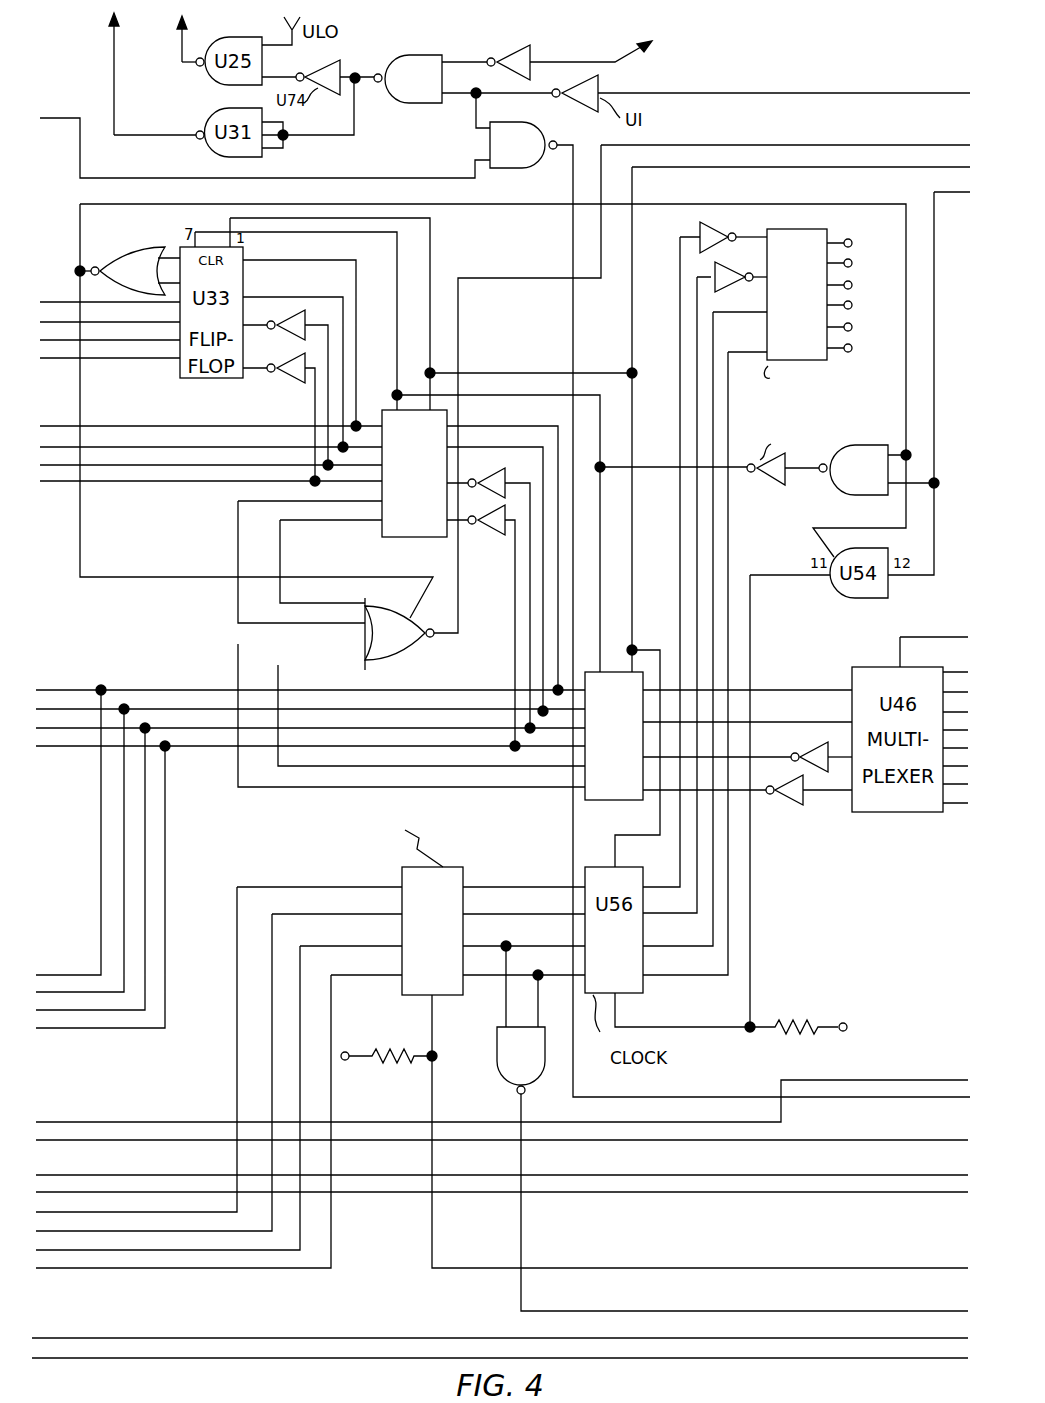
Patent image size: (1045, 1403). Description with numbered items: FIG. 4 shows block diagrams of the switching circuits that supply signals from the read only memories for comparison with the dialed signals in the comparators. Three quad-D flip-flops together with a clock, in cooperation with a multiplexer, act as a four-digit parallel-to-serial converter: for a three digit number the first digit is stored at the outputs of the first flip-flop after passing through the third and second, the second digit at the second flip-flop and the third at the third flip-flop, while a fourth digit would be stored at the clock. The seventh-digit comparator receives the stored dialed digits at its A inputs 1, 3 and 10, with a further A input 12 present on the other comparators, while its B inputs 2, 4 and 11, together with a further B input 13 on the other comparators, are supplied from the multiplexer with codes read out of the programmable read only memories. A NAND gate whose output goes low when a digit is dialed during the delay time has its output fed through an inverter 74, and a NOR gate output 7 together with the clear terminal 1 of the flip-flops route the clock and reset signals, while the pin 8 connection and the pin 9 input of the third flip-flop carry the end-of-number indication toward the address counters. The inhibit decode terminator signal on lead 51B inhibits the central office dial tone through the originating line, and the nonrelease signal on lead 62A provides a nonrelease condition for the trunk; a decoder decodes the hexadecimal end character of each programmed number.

The SI3 signal output 62A is at (123, 67).
The IDT signal output 51B is at (192, 31).
The input 12 is at (461, 73).
The inverter 74 is at (532, 56).
The input 4 is at (505, 595).
The input 13 is at (127, 263).
The flip-flop U34 7 is at (469, 557).
The input 3 is at (397, 629).
The flip-flop U35 9 is at (718, 741).
The input 1 is at (784, 309).
The input 10 is at (782, 456).
The input 11 is at (869, 465).
The input 2 is at (411, 906).
The NAND gate U7A (clock) 8 is at (732, 1126).